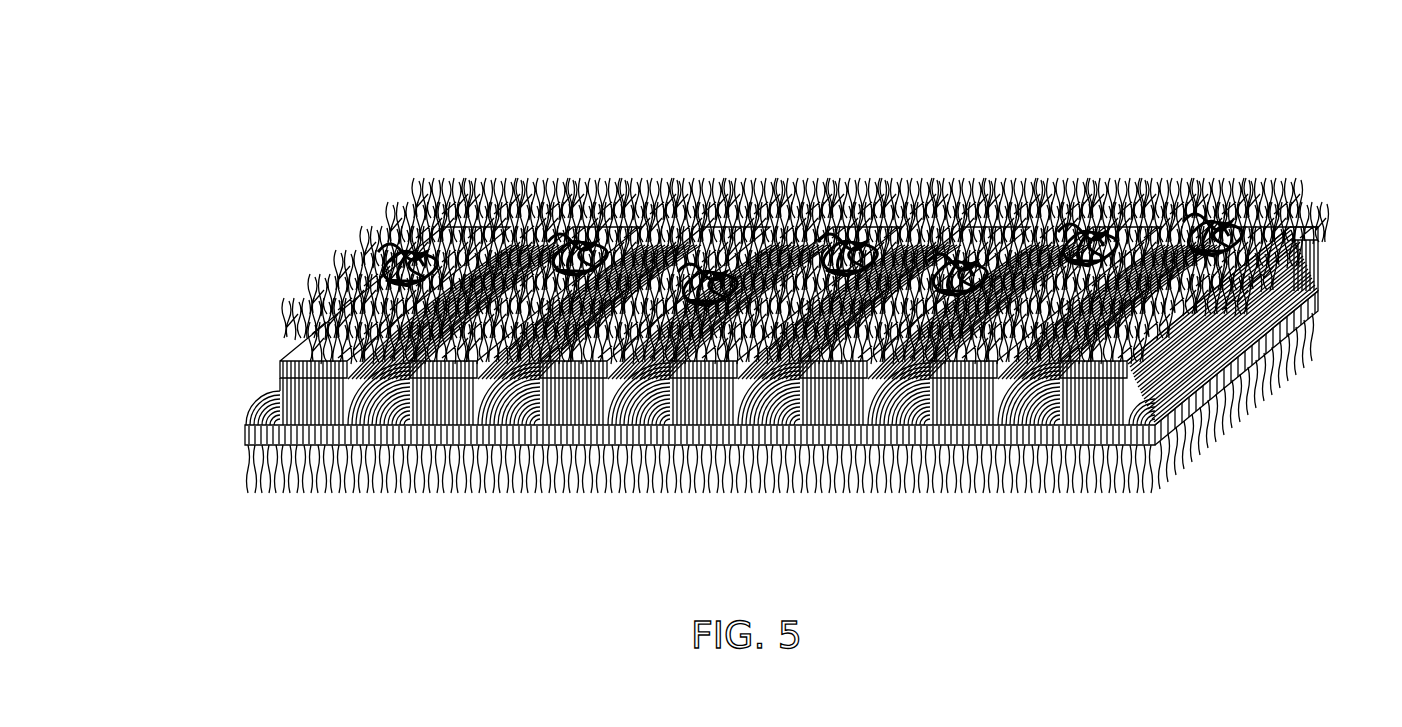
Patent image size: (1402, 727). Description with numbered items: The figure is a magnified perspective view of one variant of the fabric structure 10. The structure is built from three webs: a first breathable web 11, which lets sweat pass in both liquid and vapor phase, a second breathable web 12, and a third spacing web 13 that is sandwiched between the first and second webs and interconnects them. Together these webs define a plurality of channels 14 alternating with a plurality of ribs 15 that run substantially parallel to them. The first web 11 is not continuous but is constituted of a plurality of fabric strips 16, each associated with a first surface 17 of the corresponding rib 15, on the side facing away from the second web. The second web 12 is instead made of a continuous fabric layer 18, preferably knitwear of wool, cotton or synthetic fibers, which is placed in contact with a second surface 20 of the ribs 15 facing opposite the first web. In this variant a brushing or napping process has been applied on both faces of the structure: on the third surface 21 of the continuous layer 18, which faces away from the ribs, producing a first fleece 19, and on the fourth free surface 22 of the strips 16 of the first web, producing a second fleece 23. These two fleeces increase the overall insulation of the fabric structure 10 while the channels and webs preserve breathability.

The fabric structure 10 is at (898, 128).
The first breathable web 11 is at (272, 332).
The second breathable web 12 is at (733, 444).
The third spacing web 13 is at (238, 405).
The channels 14 is at (672, 205).
The ribs 15 is at (575, 412).
The fabric strips 16 is at (1245, 205).
The first surface 17 is at (805, 385).
The continuous fabric layer 18 is at (1170, 427).
The first fleece 19 is at (352, 485).
The second surface 20 is at (305, 417).
The third surface 21 is at (1257, 393).
The fourth free surface 22 is at (1285, 243).
The second fleece 23 is at (450, 170).